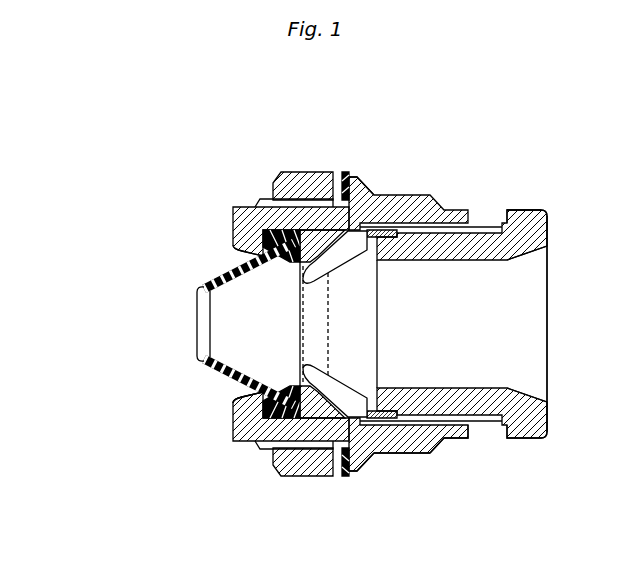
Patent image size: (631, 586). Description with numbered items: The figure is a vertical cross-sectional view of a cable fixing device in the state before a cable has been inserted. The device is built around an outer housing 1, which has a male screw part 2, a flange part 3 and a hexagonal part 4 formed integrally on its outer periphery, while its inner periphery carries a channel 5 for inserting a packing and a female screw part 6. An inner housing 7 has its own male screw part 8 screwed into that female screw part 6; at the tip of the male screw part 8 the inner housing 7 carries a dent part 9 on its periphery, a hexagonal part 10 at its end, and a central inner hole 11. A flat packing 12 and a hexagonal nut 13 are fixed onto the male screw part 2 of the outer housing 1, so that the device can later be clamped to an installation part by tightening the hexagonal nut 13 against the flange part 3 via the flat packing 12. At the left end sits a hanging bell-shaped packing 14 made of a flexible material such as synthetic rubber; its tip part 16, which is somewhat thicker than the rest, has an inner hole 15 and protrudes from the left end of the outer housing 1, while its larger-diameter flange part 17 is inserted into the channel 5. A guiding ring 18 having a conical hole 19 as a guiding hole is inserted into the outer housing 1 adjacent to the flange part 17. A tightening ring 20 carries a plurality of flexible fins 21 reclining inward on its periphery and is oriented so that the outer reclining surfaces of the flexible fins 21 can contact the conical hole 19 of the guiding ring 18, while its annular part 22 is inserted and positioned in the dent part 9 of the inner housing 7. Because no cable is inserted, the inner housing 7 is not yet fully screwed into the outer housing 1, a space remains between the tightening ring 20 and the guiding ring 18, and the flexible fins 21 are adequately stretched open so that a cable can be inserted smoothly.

The outer housing 1 is at (397, 195).
The male screw part 2 is at (262, 197).
The flange part 3 is at (358, 180).
The hexagonal part 4 is at (430, 195).
The channel for inserting a packing 5 is at (240, 237).
The female screw part 6 is at (470, 222).
The inner housing 7 is at (547, 233).
The male screw part 8 is at (507, 212).
The dent part 9 is at (397, 240).
The hexagonal part 10 is at (543, 212).
The inner hole 11 is at (528, 340).
The flat packing 12 is at (344, 172).
The hexagonal nut 13 is at (300, 172).
The hanging bell-shaped packing 14 is at (220, 277).
The inner hole 15 is at (196, 323).
The tip part 16 is at (198, 357).
The flange part 17 is at (237, 427).
The guiding ring 18 is at (302, 410).
The conical hole 19 is at (348, 432).
The tightening ring 20 is at (382, 453).
The flexible fins 21 is at (333, 283).
The annular part 22 is at (433, 450).